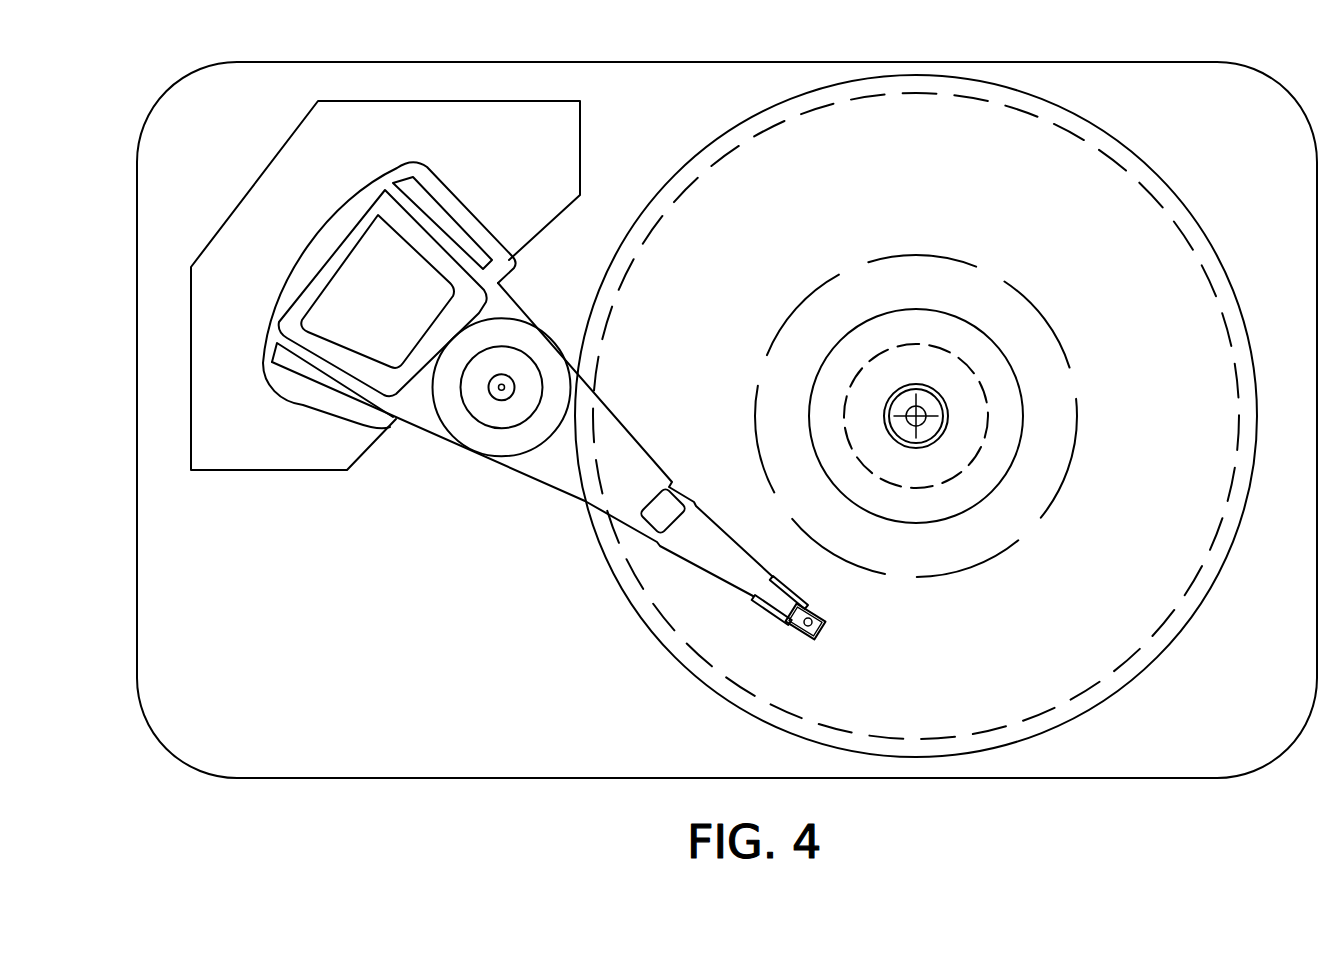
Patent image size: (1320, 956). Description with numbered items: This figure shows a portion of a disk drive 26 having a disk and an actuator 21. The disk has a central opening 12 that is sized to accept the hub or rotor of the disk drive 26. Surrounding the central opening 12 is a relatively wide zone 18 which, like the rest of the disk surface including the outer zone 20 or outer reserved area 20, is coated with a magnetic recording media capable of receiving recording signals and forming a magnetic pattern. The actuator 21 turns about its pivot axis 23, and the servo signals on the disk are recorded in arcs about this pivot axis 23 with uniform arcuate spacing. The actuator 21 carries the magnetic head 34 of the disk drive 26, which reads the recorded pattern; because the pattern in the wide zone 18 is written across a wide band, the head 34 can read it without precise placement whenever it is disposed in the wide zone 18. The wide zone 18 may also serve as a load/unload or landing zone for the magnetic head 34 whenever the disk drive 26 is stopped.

The disk drive 26 is at (989, 63).
The outer zone 20 is at (1177, 205).
The wide zone 18 is at (963, 297).
The central opening 12 is at (900, 344).
The pivot axis 23 is at (505, 387).
The actuator 21 is at (458, 475).
The magnetic head 34 is at (818, 616).